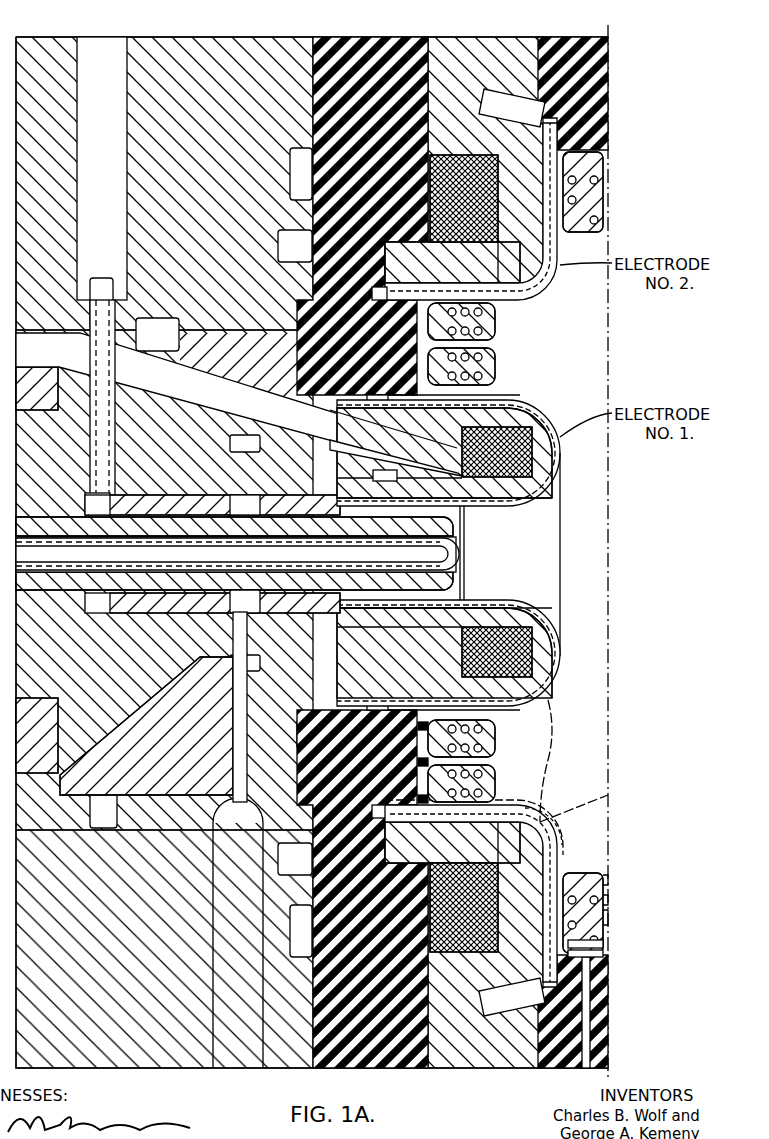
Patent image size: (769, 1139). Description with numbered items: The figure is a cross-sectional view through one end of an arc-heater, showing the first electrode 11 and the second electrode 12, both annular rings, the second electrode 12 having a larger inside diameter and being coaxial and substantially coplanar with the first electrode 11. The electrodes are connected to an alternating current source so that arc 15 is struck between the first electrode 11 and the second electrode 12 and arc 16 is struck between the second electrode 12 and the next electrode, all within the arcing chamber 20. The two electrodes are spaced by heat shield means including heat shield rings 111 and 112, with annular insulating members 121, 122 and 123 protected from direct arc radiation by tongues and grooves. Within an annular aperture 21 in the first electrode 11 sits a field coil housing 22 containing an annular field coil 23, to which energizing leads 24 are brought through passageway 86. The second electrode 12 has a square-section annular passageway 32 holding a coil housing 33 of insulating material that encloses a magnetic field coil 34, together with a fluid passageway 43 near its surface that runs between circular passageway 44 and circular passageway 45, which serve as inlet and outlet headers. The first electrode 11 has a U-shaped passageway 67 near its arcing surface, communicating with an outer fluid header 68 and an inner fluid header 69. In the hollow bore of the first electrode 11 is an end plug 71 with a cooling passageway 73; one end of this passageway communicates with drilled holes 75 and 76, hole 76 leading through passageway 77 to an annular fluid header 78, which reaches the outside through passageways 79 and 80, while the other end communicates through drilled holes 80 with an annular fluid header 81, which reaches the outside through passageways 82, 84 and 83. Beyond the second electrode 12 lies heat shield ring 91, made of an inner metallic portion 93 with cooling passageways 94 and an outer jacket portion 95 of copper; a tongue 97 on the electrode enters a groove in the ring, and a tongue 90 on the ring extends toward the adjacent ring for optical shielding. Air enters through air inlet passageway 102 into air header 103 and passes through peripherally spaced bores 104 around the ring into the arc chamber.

The first electrode 11 is at (558, 653).
The second electrode 12 is at (516, 812).
The arc 15 is at (552, 729).
The arc 16 is at (580, 805).
The arcing chamber 20 is at (577, 554).
The annular aperture 21 is at (438, 432).
The field coil housing 22 is at (500, 492).
The field coil 23 is at (535, 498).
The energizing leads 24 is at (268, 400).
The passageway 32 is at (449, 243).
The coil housing 33 is at (488, 245).
The magnetic field coil 34 is at (455, 156).
The fluid passageway 43 is at (510, 292).
The circular passageway 44 is at (505, 118).
The circular passageway 45 is at (371, 296).
The U-shaped passageway 67 is at (532, 402).
The fluid header 68 is at (377, 395).
The fluid header 69 is at (375, 476).
The end plug 71 is at (175, 503).
The passageway 73 is at (461, 545).
The drilled hole 75 is at (250, 500).
The drilled hole 76 is at (228, 610).
The passageway 77 is at (242, 642).
The annular fluid header 78 is at (235, 668).
The passageway 79 is at (240, 722).
The passageway 80 is at (96, 527).
The annular fluid header 81 is at (86, 503).
The passageway 82 is at (96, 441).
The passageway 83 is at (96, 56).
The passageway 84 is at (101, 292).
The passageway 86 is at (238, 396).
The tongue 90 is at (604, 917).
The heat shield ring 91 is at (580, 160).
The inner metallic portion 93 is at (604, 898).
The passageways 94 is at (562, 864).
The outer jacket portion 95 is at (604, 877).
The tongue 97 is at (553, 862).
The air inlet passageway 102 is at (592, 1046).
The air header 103 is at (604, 958).
The bores 104 is at (603, 945).
The heat shield ring 111 is at (494, 370).
The heat shield ring 112 is at (494, 325).
The annular insulating member 121 is at (418, 726).
The annular insulating member 122 is at (418, 762).
The annular insulating member 123 is at (418, 799).